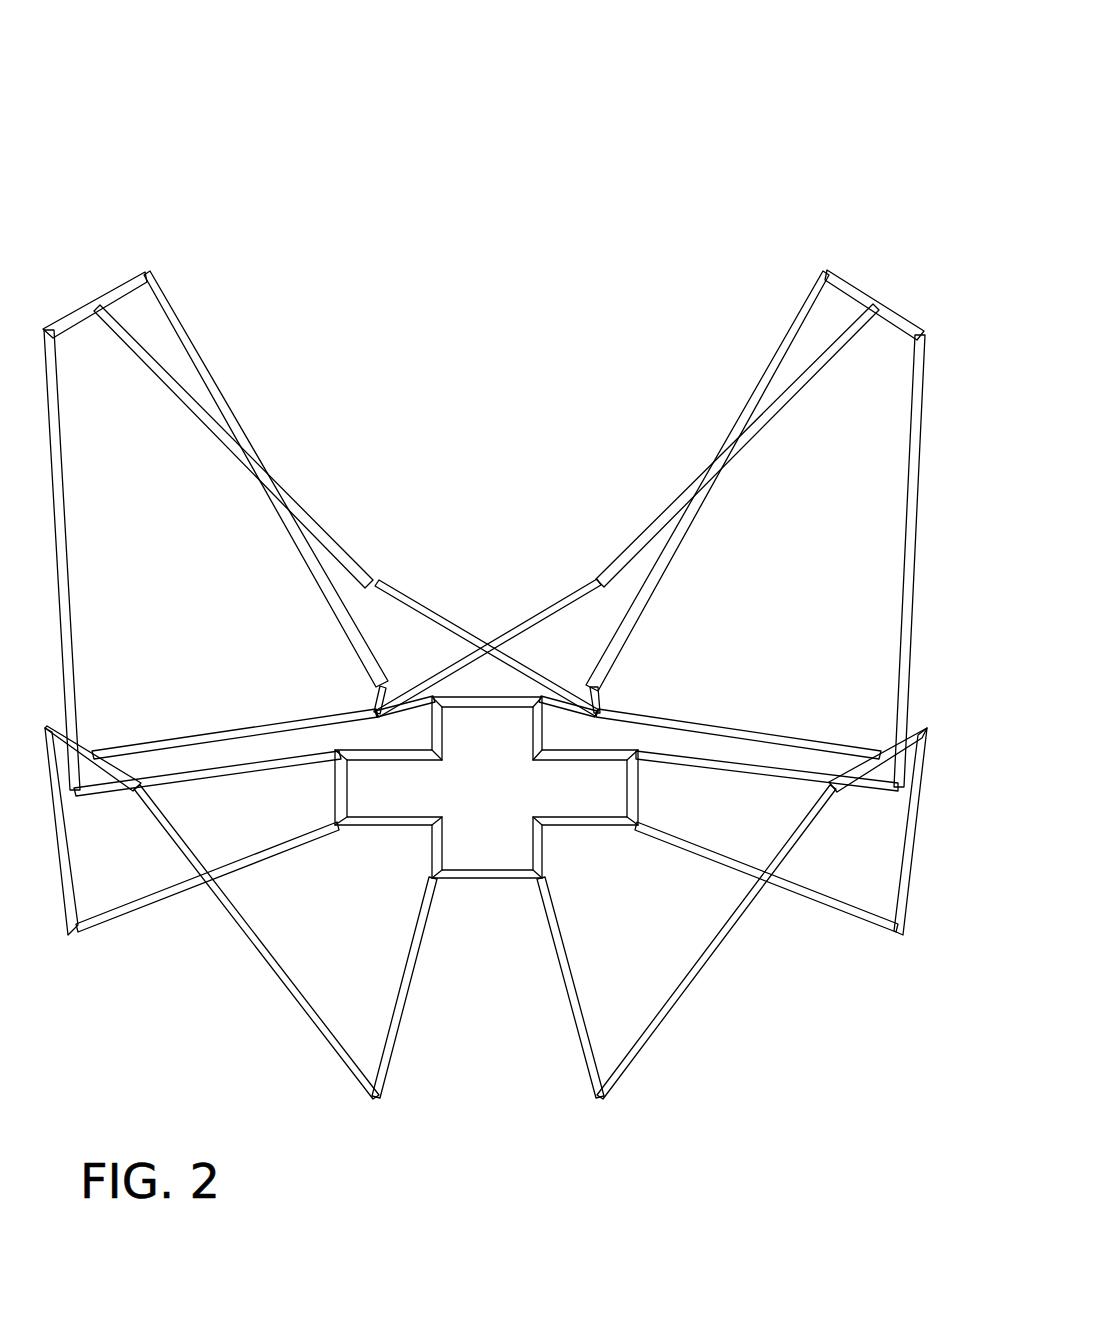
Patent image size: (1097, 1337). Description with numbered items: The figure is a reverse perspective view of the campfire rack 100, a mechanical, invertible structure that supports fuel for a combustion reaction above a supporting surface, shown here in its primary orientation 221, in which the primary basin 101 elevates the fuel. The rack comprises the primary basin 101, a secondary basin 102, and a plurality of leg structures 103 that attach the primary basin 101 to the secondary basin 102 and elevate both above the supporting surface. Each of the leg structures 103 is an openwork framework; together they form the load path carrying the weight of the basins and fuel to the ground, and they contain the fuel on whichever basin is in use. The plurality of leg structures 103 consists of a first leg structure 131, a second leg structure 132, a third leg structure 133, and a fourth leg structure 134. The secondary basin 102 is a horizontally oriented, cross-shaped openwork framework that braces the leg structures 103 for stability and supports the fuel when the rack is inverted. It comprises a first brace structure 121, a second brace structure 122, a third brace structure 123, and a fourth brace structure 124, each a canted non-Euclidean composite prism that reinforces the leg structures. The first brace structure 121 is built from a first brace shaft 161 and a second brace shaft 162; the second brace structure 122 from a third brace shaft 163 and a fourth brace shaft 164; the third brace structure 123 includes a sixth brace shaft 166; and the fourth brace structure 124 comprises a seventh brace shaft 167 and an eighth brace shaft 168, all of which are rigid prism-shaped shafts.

The campfire rack 100 is at (74, 170).
The primary orientation 221 is at (874, 154).
The primary basin 101 is at (493, 858).
The secondary basin 102 is at (312, 297).
The plurality of leg structures 103 is at (397, 1098).
The first brace structure 121 is at (190, 745).
The second brace structure 122 is at (780, 725).
The third brace structure 123 is at (752, 442).
The fourth brace structure 124 is at (328, 503).
The first leg structure 131 is at (223, 967).
The second leg structure 132 is at (763, 922).
The third leg structure 133 is at (938, 402).
The fourth leg structure 134 is at (77, 298).
The first brace shaft 161 is at (140, 751).
The second brace shaft 162 is at (442, 672).
The third brace shaft 163 is at (673, 730).
The fourth brace shaft 164 is at (600, 692).
The sixth brace shaft 166 is at (546, 612).
The seventh brace shaft 167 is at (278, 483).
The eighth brace shaft 168 is at (438, 616).